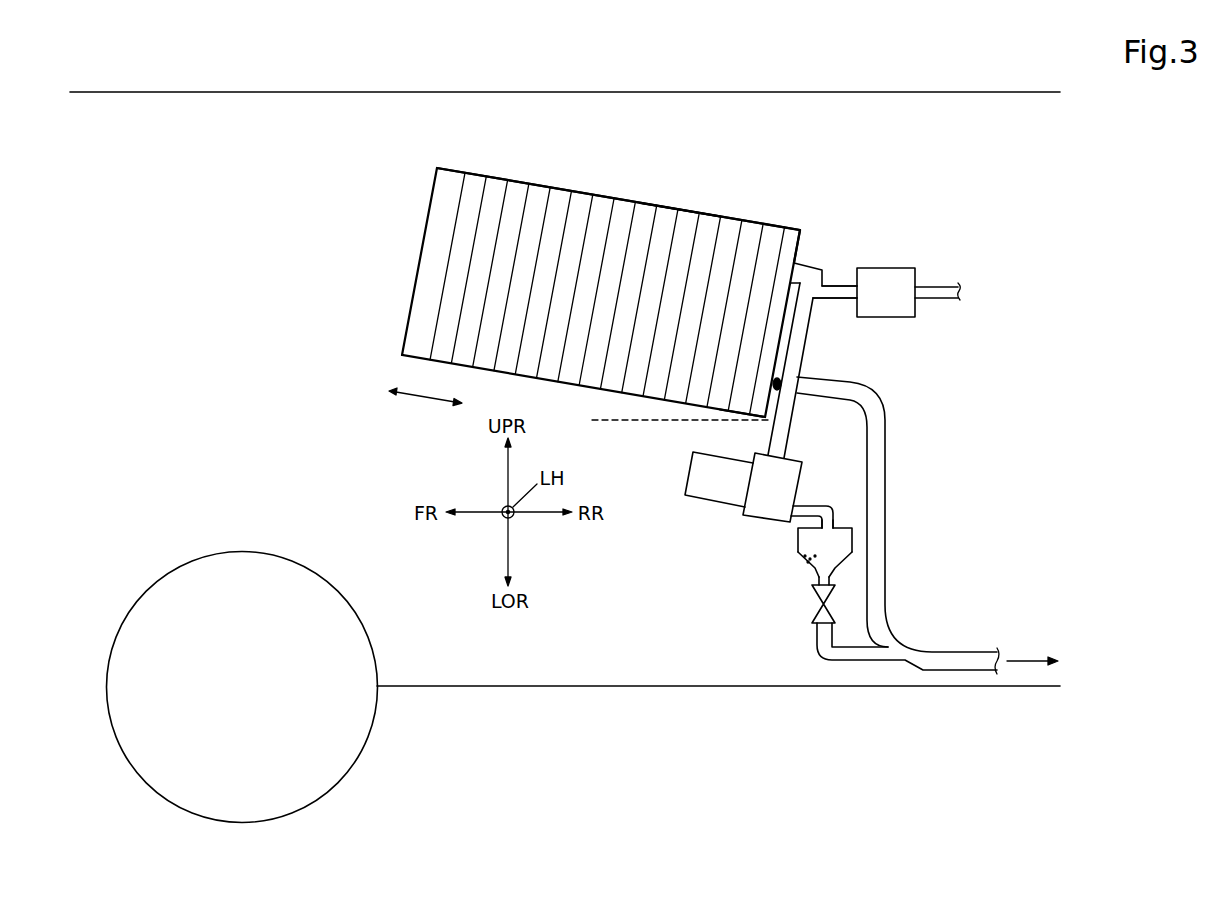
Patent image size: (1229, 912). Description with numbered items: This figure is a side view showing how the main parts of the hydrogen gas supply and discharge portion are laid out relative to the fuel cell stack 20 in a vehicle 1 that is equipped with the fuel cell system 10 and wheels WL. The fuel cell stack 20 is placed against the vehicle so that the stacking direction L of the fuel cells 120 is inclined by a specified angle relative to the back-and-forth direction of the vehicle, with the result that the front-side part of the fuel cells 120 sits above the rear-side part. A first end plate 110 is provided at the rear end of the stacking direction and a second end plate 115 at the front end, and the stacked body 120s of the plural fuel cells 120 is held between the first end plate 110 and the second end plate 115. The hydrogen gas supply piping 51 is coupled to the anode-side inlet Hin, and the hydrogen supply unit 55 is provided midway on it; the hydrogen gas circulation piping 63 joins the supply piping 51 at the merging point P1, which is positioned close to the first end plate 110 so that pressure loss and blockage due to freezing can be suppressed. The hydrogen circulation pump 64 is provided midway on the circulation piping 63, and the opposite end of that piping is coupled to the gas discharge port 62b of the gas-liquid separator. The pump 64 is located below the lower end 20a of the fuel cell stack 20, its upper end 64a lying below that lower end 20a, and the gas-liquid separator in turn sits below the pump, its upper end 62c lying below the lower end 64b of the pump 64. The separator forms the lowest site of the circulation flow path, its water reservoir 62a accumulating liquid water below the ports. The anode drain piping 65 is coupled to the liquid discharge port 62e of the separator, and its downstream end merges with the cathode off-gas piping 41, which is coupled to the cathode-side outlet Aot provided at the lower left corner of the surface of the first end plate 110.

The vehicle 1 is at (466, 78).
The fuel cell system 10 is at (374, 150).
The fuel cell stack 20 is at (628, 277).
The lower end of the fuel cell stack 20a is at (762, 421).
The first end plate 110 is at (797, 228).
The second end plate 115 is at (455, 168).
The fuel cells 120 is at (533, 182).
The stacked body 120s is at (685, 209).
The anode-side inlet Hin is at (804, 266).
The cathode-side outlet Aot is at (778, 381).
The merging point P1 is at (818, 302).
The hydrogen supply unit 55 is at (897, 268).
The hydrogen gas supply piping 51 is at (940, 287).
The hydrogen gas circulation piping 63 is at (792, 434).
The cathode off-gas piping 41 is at (887, 453).
The hydrogen circulation pump 64 is at (802, 478).
The upper end of the hydrogen circulation pump 64a is at (753, 455).
The lower end of the hydrogen circulation pump 64b is at (782, 530).
The water reservoir 62a is at (797, 549).
The gas discharge port 62b is at (797, 538).
The upper end of the gas-liquid separator 62c is at (832, 527).
The liquid discharge port 62e is at (812, 571).
The anode drain piping 65 is at (817, 639).
The wheels WL is at (362, 747).
The stacking direction L is at (425, 387).